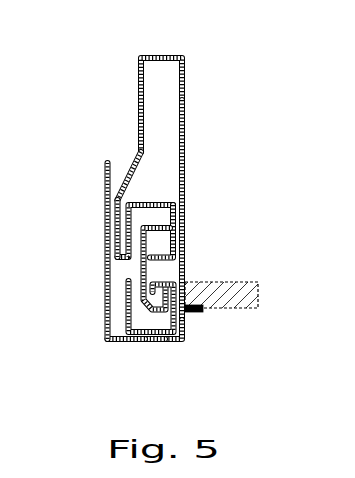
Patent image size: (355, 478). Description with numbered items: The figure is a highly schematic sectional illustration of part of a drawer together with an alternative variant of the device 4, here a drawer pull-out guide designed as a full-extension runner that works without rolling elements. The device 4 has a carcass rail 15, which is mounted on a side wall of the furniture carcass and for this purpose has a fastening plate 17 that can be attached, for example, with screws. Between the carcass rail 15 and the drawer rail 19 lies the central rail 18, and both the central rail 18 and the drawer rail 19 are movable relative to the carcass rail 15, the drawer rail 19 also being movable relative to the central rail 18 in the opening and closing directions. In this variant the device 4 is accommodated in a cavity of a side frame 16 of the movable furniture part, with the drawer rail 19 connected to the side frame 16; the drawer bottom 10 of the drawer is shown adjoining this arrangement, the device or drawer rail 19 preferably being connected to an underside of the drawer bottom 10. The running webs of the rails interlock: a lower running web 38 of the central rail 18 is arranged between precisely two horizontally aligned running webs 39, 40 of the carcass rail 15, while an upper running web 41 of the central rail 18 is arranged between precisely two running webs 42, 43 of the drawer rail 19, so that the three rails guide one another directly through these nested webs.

The device 4 is at (199, 114).
The drawer bottom 10 is at (257, 288).
The carcass rail 15 is at (183, 325).
The side frame 16 is at (186, 76).
The fastening plate 17 is at (104, 175).
The central rail 18 is at (130, 269).
The drawer rail 19 is at (183, 214).
The lower running web 38 is at (120, 328).
The running web 39 is at (147, 343).
The running web 40 is at (172, 281).
The upper running web 41 is at (120, 227).
The running web 42 is at (171, 246).
The running web 43 is at (160, 203).